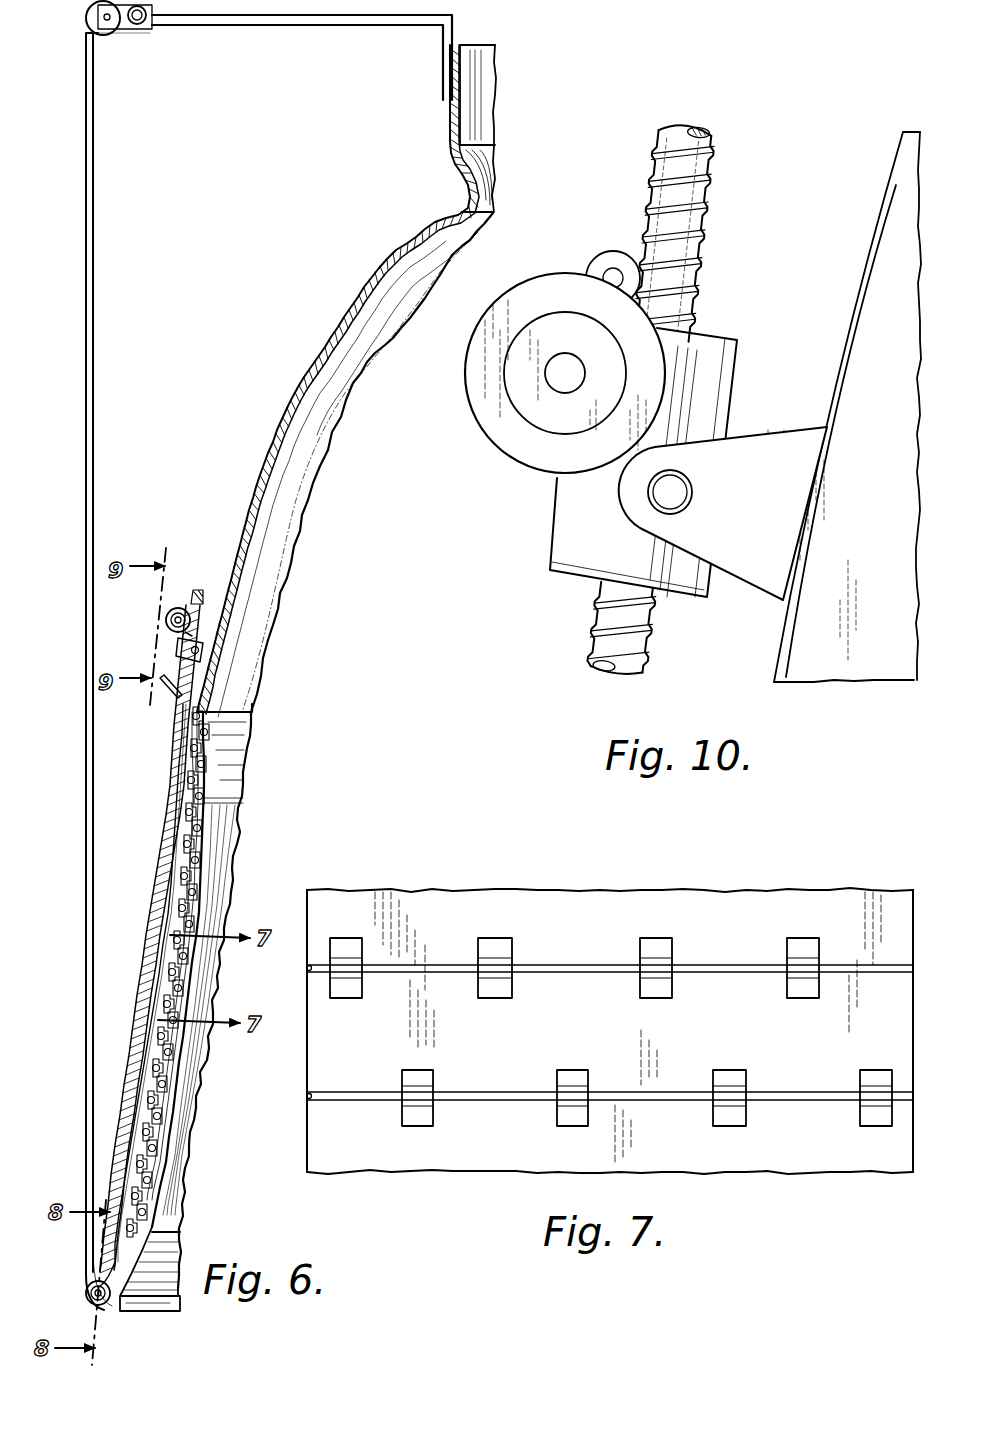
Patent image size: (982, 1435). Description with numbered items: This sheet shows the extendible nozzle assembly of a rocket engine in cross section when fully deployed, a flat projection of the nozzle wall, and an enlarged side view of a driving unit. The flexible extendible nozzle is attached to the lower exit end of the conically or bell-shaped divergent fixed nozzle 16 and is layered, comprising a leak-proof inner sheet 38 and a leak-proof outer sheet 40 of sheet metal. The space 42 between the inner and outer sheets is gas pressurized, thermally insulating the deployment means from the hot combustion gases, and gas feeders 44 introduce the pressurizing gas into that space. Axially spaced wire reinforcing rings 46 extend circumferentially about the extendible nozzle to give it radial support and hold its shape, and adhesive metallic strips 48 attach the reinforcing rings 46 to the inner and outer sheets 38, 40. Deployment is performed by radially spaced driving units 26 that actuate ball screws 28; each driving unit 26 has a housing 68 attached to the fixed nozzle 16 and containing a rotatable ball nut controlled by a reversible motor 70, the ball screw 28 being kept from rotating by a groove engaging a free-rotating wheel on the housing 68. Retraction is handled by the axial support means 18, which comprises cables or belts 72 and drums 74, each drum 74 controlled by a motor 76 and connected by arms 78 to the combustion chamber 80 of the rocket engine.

In FIG. 6, the fixed nozzle 16 is at (292, 380).
In FIG. 10, the fixed nozzle 16 is at (858, 272).
In FIG. 6, the axial support means 18 is at (102, 72).
In FIG. 10, the driving unit 26 is at (548, 588).
In FIG. 10, the ball screw 28 is at (722, 200).
In FIG. 6, the inner sheet 38 is at (235, 818).
In FIG. 6, the outer sheet 40 is at (168, 772).
In FIG. 6, the space 42 is at (180, 886).
In FIG. 6, the gas feeder 44 is at (168, 700).
In FIG. 6, the wire reinforcing ring 46 is at (180, 862).
In FIG. 7, the wire reinforcing ring 46 is at (556, 965).
In FIG. 7, the adhesive metallic strip 48 is at (504, 948).
In FIG. 10, the housing 68 is at (738, 390).
In FIG. 10, the reversible motor 70 is at (528, 455).
In FIG. 6, the cable or belt 72 is at (95, 264).
In FIG. 6, the drum 74 is at (112, 36).
In FIG. 6, the motor 76 is at (143, 28).
In FIG. 6, the arm 78 is at (350, 25).
In FIG. 6, the combustion chamber 80 is at (448, 122).